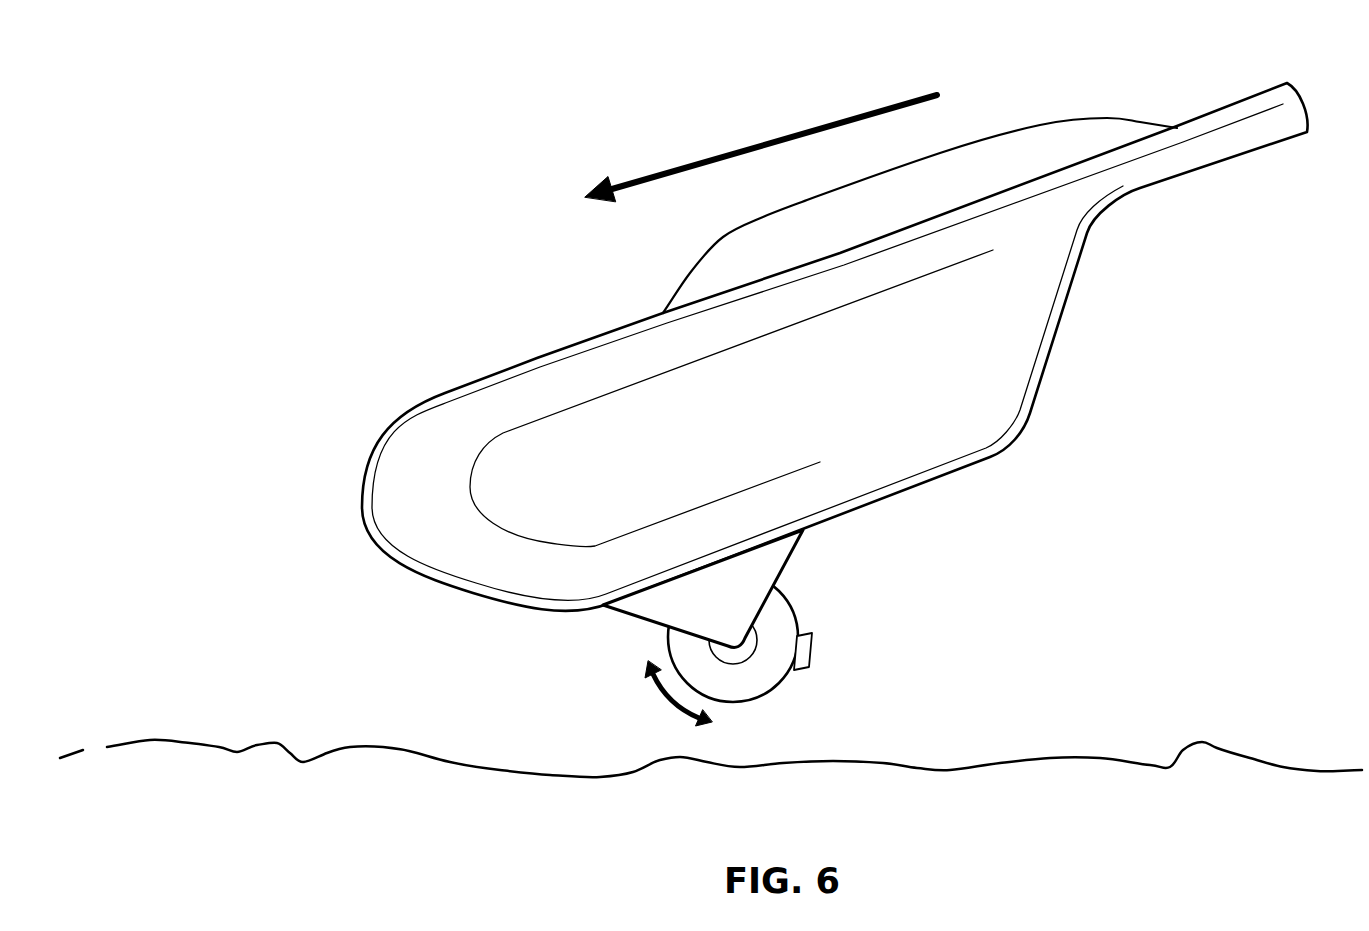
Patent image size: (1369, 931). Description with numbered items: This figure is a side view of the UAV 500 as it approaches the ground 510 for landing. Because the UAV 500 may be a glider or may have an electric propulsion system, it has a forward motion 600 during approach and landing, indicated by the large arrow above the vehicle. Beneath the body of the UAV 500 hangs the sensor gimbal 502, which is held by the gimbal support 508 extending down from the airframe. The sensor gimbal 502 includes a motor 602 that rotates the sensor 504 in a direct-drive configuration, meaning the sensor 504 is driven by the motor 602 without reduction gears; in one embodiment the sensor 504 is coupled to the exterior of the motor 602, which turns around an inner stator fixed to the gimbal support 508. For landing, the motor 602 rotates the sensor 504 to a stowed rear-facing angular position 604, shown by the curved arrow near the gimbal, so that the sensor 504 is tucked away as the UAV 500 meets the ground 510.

The UAV 500 is at (585, 343).
The sensor gimbal 502 is at (798, 618).
The sensor 504 is at (810, 655).
The gimbal support 508 is at (793, 555).
The ground 510 is at (219, 747).
The forward motion 600 is at (743, 150).
The motor 602 is at (753, 647).
The stowed rear-facing angular position 604 is at (663, 710).